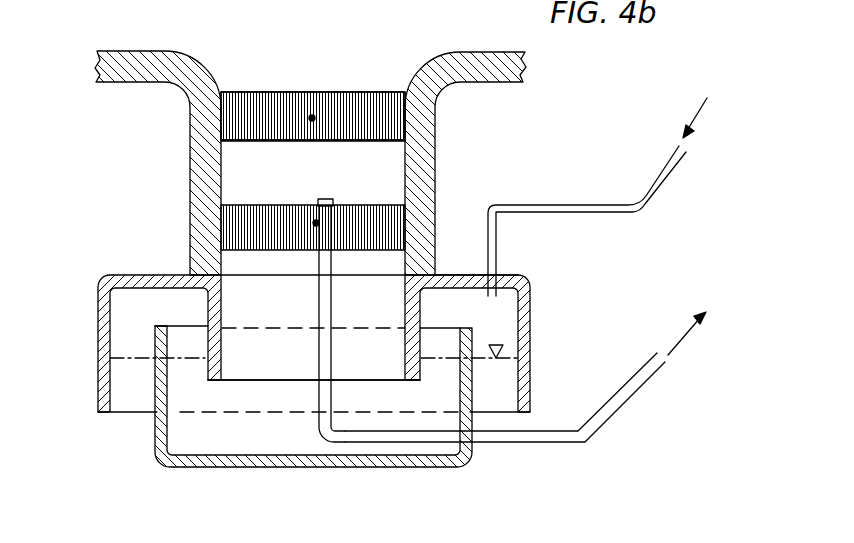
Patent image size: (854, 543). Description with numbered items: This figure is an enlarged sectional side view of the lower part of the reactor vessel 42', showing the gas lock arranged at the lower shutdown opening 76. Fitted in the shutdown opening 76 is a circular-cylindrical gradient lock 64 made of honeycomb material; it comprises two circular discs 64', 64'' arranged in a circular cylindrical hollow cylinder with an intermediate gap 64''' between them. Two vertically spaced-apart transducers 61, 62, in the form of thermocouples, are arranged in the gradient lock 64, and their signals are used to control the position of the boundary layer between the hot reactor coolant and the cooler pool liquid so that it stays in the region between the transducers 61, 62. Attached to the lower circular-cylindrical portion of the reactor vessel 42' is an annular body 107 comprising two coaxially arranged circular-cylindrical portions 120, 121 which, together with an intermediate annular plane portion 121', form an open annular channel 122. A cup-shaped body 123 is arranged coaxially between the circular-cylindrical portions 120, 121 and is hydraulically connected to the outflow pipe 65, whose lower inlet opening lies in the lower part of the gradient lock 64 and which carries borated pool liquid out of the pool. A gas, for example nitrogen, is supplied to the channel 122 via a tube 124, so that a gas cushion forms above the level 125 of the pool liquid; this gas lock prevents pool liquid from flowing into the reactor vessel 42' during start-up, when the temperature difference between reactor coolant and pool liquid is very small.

The reactor vessel 42' is at (310, 152).
The gradient lock 64 is at (313, 94).
The circular disc 64' is at (313, 96).
The circular disc 64'' is at (272, 227).
The intermediate gap 64''' is at (271, 155).
The transducer 61 is at (312, 120).
The transducer 62 is at (315, 220).
The lower shutdown opening 76 is at (236, 256).
The annular body 107 is at (538, 312).
The circular-cylindrical portion 121 is at (503, 343).
The intermediate annular plane portion 121' is at (476, 244).
The open annular channel 122 is at (183, 313).
The circular-cylindrical portion 120 is at (406, 340).
The level of the pool liquid 125 is at (506, 350).
The cup-shaped body 123 is at (300, 468).
The outflow pipe 65 is at (566, 436).
The tube 124 is at (552, 204).